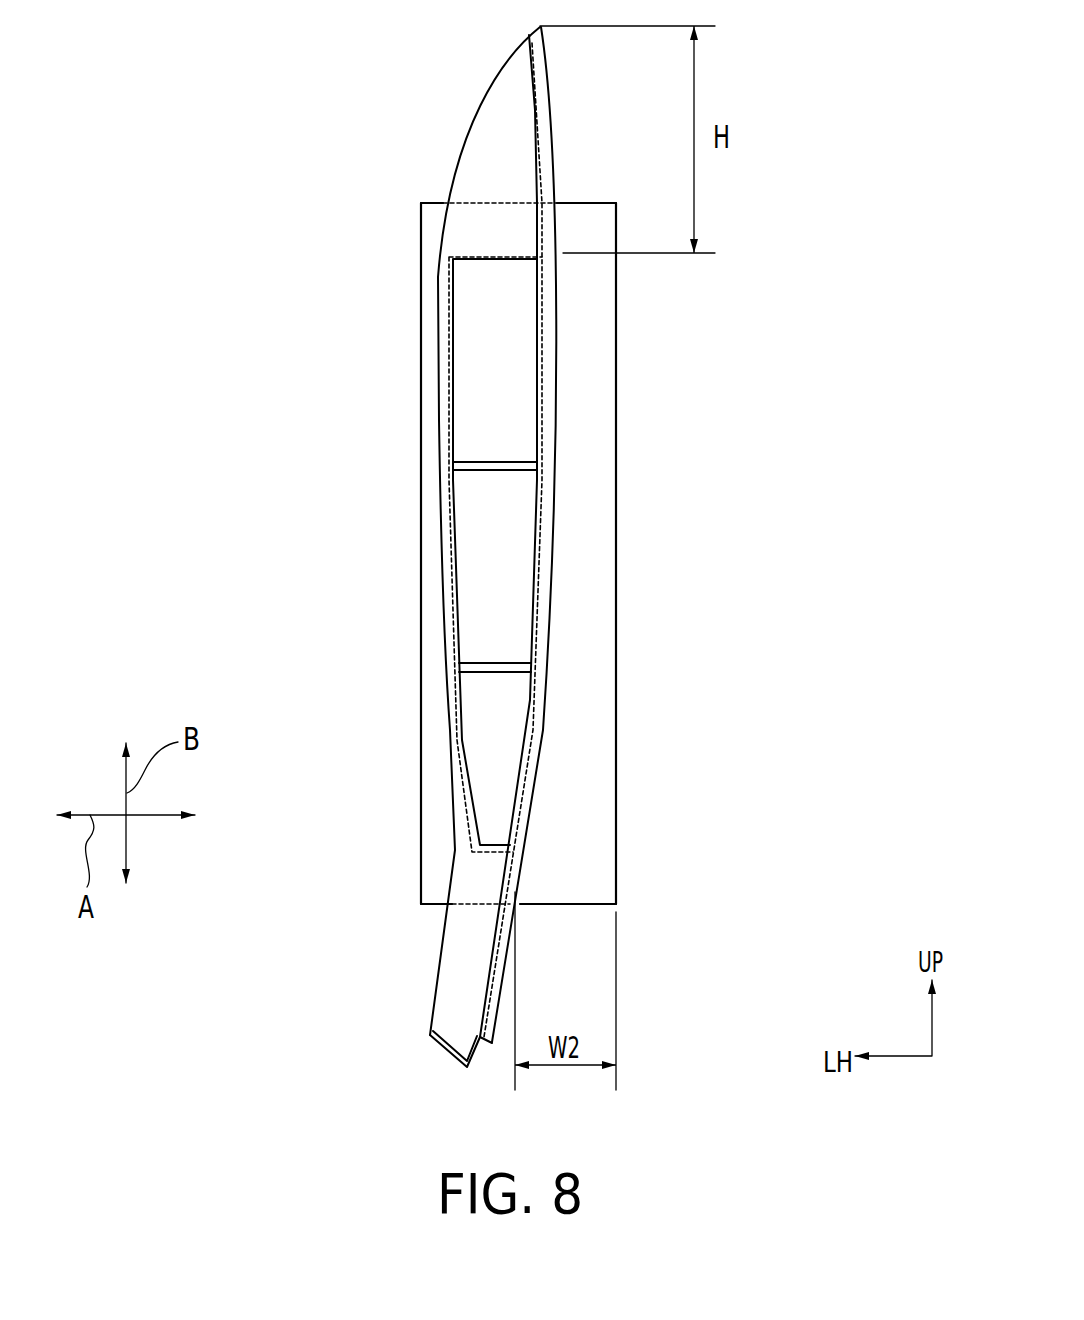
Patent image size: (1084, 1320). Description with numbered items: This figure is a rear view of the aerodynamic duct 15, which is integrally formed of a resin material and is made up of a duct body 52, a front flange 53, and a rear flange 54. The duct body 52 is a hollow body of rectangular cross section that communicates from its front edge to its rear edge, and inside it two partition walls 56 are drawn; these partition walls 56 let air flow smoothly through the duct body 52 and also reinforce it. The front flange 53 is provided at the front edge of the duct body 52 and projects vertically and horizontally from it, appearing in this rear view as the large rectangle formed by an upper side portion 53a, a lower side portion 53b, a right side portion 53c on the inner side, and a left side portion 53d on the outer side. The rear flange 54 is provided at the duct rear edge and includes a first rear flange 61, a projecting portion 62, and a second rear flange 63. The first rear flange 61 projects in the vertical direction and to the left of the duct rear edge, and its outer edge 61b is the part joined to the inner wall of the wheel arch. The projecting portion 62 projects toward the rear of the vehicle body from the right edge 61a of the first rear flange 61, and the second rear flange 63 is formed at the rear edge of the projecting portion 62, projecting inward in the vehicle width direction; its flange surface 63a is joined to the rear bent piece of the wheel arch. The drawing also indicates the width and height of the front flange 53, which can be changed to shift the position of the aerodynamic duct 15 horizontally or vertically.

The aerodynamic duct 15 is at (405, 477).
The duct body 52 is at (450, 527).
The front flange 53 is at (603, 442).
The upper side portion 53a is at (587, 215).
The lower side portion 53b is at (567, 893).
The right side portion 53c is at (588, 612).
The left side portion 53d is at (432, 725).
The rear flange 54 is at (560, 548).
The partition walls 56 is at (498, 460).
The first rear flange 61 is at (442, 433).
The right edge 61a is at (528, 125).
The outer edge 61b is at (437, 267).
The projecting portion 62 is at (542, 500).
The second rear flange 63 is at (557, 333).
The flange surface 63a is at (548, 390).